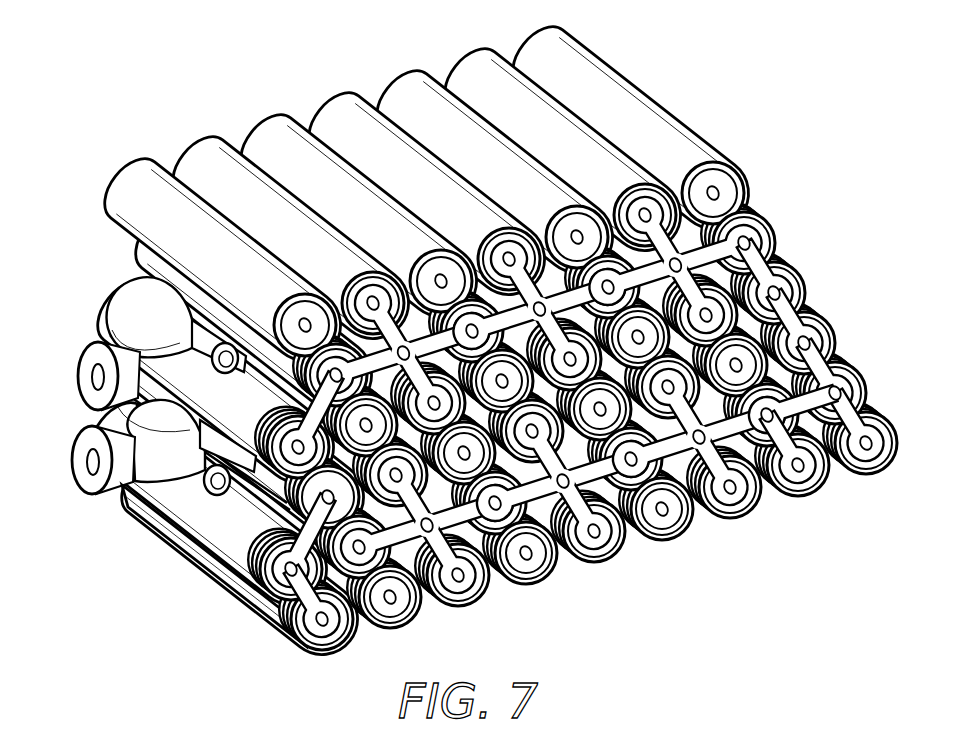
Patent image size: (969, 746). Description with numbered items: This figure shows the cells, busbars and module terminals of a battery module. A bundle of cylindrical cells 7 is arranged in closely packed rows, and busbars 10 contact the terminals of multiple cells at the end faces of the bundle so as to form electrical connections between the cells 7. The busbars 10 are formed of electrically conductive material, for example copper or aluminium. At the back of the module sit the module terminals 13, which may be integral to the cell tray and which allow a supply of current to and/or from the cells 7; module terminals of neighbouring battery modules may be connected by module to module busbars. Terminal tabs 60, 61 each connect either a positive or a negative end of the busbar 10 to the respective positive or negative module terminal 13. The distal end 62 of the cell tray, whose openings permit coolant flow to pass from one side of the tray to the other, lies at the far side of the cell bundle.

The cells 7 is at (641, 116).
The busbars 10 is at (603, 546).
The module terminals 13 is at (82, 372).
The terminal tab 60 is at (116, 311).
The terminal tab 61 is at (215, 578).
The distal end 62 is at (874, 462).